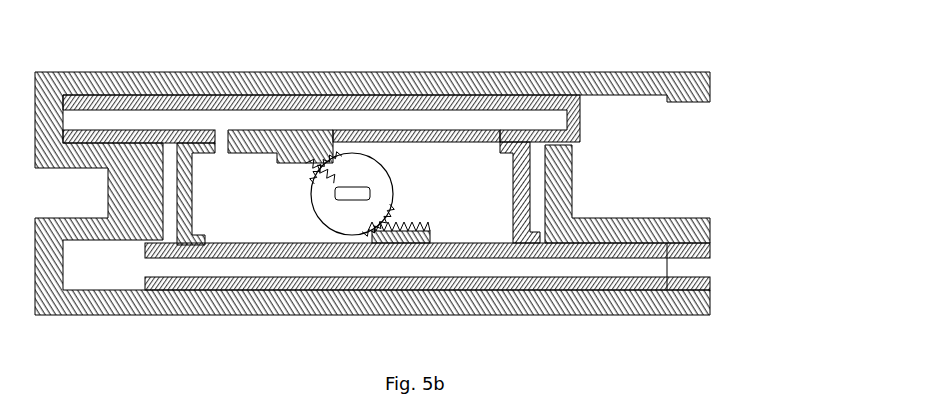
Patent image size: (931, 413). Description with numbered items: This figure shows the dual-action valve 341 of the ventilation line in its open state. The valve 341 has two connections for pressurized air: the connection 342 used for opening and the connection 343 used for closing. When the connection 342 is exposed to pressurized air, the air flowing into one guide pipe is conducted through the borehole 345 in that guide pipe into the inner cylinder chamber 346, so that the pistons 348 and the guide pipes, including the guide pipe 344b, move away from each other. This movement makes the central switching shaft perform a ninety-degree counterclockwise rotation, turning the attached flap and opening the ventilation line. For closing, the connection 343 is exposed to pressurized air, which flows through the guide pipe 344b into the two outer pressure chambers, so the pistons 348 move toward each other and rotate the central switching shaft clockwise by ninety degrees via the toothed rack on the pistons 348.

The valve 341 is at (697, 187).
The connection of valve of the ventilation line 342 is at (695, 120).
The connection of valve of the ventilation line 343 is at (693, 263).
The guide pipe 344b is at (557, 312).
The borehole 345 is at (218, 198).
The internal cylinder chamber 346 is at (220, 160).
The piston 348 is at (524, 143).